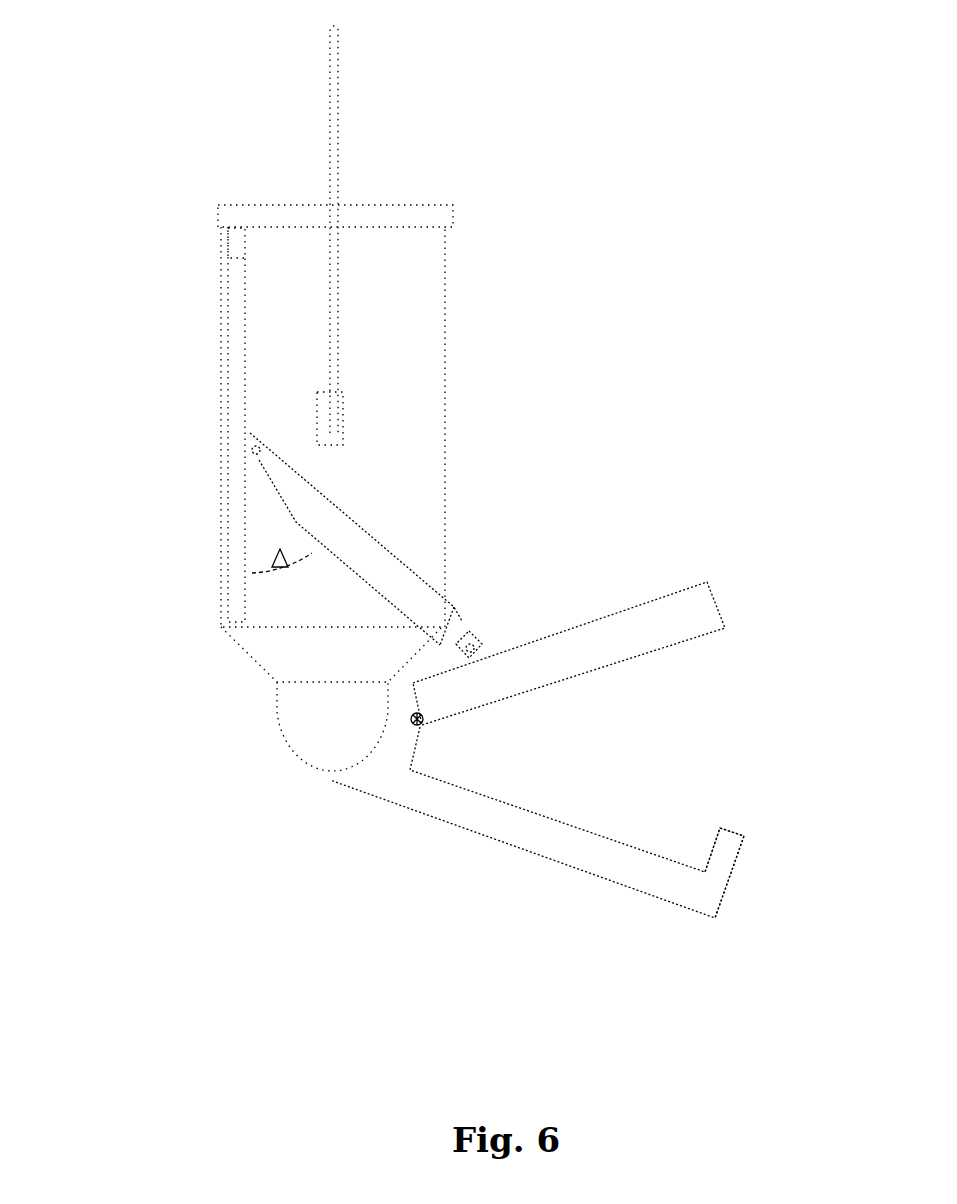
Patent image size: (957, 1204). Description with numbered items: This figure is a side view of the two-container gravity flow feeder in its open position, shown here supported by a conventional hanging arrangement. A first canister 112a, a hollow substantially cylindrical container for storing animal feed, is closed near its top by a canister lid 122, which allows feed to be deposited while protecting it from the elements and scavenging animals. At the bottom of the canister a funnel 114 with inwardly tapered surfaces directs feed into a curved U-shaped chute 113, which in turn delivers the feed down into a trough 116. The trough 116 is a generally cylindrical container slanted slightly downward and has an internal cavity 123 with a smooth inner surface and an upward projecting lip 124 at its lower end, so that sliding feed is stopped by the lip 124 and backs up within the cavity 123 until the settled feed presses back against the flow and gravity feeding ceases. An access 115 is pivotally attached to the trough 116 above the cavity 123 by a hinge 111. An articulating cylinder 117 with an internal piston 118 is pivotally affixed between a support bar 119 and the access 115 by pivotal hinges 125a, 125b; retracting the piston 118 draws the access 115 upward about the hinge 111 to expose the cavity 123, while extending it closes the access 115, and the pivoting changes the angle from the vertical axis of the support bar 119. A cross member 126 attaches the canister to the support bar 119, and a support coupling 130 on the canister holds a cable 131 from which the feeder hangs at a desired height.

The hinge 111 is at (415, 722).
The first canister 112a is at (390, 332).
The U-shaped chute 113 is at (342, 732).
The funnel 114 is at (328, 657).
The access 115 is at (625, 618).
The trough 116 is at (605, 863).
The articulating cylinder 117 is at (287, 492).
The internal piston 118 is at (463, 632).
The support bar 119 is at (237, 340).
The canister lid 122 is at (388, 213).
The internal cavity 123 is at (697, 830).
The upward projecting lip 124 is at (722, 872).
The pivotal hinge 125a is at (252, 453).
The pivotal hinge 125b is at (482, 652).
The cross member 126 is at (238, 247).
The support coupling 130 is at (332, 436).
The cable 131 is at (335, 187).